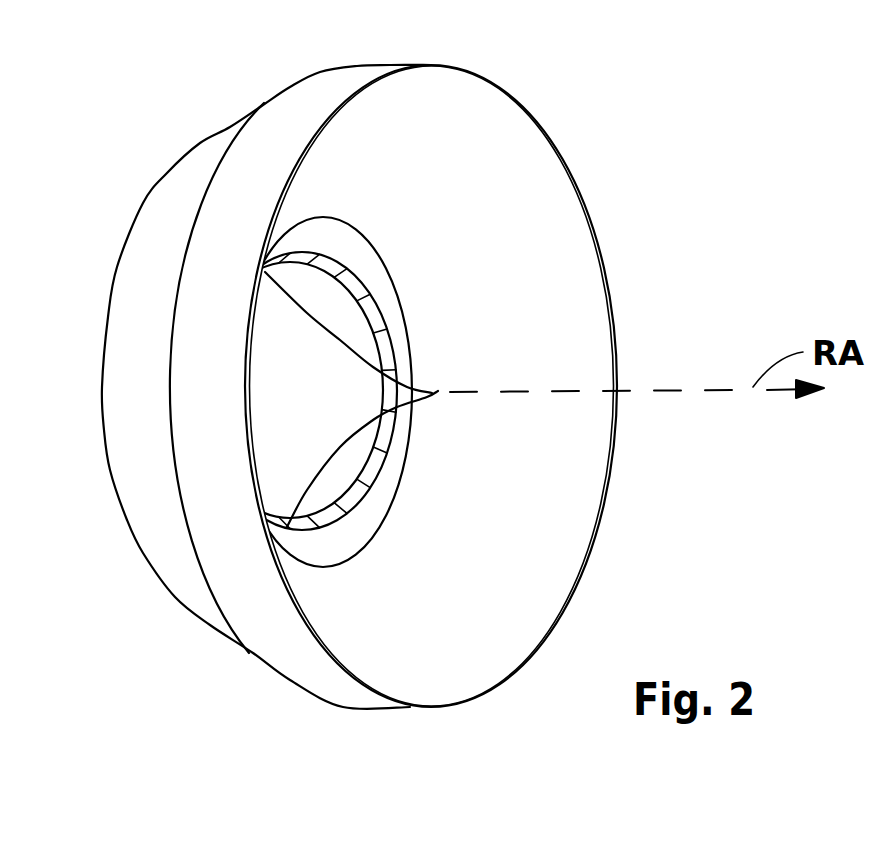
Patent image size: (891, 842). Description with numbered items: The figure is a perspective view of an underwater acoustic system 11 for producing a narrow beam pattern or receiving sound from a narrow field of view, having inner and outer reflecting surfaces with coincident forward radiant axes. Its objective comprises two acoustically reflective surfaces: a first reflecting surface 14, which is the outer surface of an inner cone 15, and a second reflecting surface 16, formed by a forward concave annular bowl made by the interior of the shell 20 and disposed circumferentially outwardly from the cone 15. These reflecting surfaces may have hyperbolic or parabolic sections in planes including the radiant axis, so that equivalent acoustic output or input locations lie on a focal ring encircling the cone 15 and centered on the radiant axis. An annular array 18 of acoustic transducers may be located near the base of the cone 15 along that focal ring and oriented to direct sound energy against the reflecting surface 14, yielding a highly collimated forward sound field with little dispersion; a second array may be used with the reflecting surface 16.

The underwater acoustic system 11 is at (415, 415).
The first reflecting surface 14 is at (380, 398).
The inner cone 15 is at (437, 391).
The second reflecting surface 16 is at (547, 267).
The annular array of acoustic transducers 18 is at (366, 248).
The shell 20 is at (300, 670).